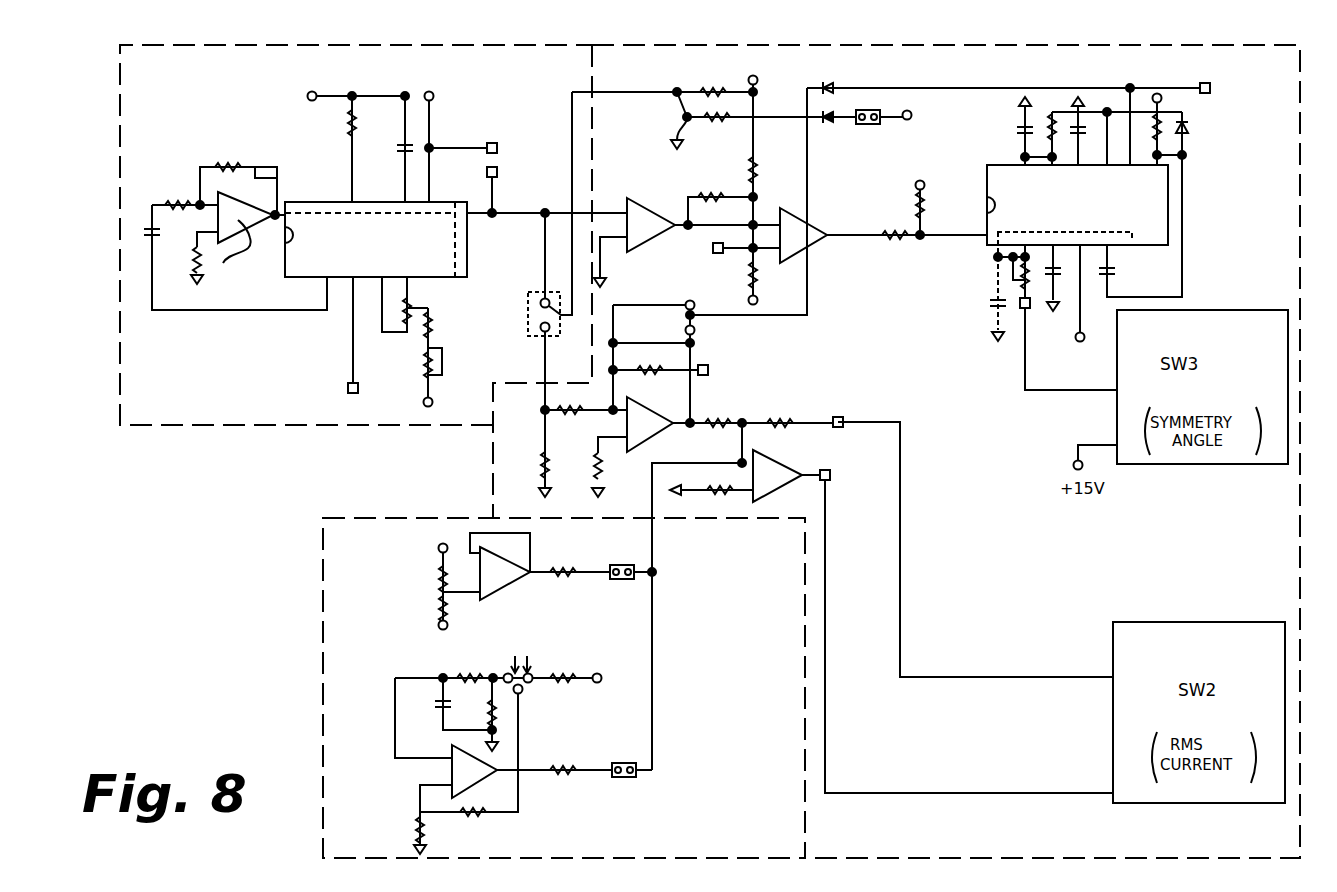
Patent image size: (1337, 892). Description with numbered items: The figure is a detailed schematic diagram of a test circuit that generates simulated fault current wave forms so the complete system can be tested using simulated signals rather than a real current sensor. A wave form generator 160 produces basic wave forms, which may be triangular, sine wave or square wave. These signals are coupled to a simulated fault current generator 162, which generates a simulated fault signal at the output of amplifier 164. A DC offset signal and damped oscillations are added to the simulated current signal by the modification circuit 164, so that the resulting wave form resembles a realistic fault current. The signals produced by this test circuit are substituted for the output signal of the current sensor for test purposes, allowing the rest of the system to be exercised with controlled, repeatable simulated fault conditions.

The wave form generator 160 is at (578, 45).
The simulated fault current generator 162 is at (966, 47).
The modification circuit 164 is at (323, 676).